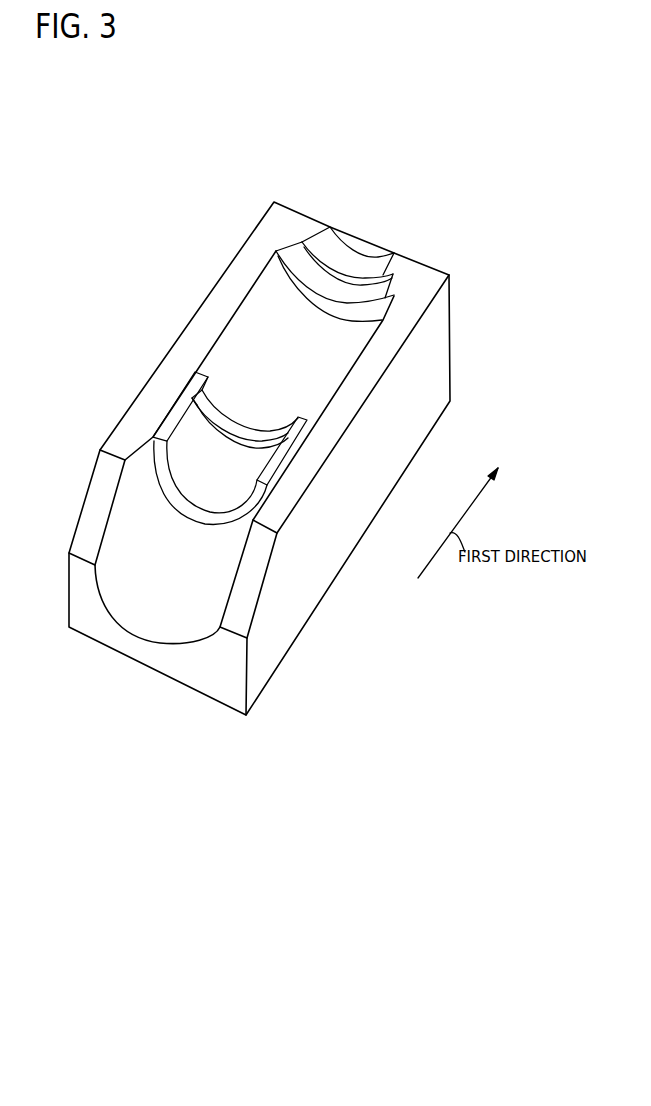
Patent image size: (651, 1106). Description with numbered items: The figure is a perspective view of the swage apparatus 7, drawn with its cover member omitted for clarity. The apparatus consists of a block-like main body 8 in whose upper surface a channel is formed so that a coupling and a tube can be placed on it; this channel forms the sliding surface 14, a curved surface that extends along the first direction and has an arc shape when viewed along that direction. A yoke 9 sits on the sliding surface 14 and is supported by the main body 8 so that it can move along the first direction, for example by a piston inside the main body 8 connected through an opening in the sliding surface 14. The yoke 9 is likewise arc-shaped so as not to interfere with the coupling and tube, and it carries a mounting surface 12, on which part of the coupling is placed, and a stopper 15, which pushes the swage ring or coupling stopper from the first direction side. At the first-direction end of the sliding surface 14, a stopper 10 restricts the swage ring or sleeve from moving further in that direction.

The swage apparatus 7 is at (305, 458).
The main body 8 is at (443, 341).
The yoke 9 is at (230, 467).
The stopper 10 is at (354, 261).
The mounting surface 12 is at (207, 390).
The sliding surface 14 is at (288, 365).
The stopper 15 is at (252, 442).